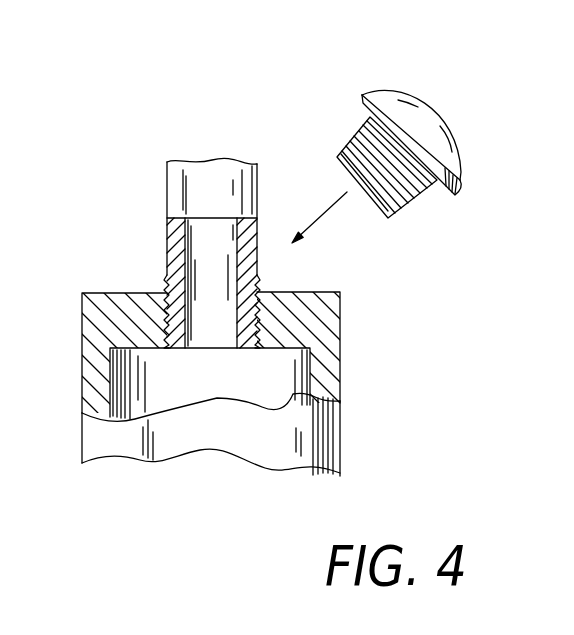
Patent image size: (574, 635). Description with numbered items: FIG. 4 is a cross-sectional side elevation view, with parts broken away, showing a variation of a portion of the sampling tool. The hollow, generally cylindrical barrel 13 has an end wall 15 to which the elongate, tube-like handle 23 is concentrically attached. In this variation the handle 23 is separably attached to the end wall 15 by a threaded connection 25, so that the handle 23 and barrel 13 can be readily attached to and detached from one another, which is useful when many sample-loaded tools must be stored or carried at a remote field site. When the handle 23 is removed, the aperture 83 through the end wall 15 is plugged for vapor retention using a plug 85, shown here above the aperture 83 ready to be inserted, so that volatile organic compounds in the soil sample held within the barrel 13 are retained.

The barrel 13 is at (338, 378).
The end wall 15 is at (307, 290).
The handle 23 is at (167, 183).
The threaded connection 25 is at (165, 292).
The aperture 83 is at (261, 319).
The plug 85 is at (354, 139).